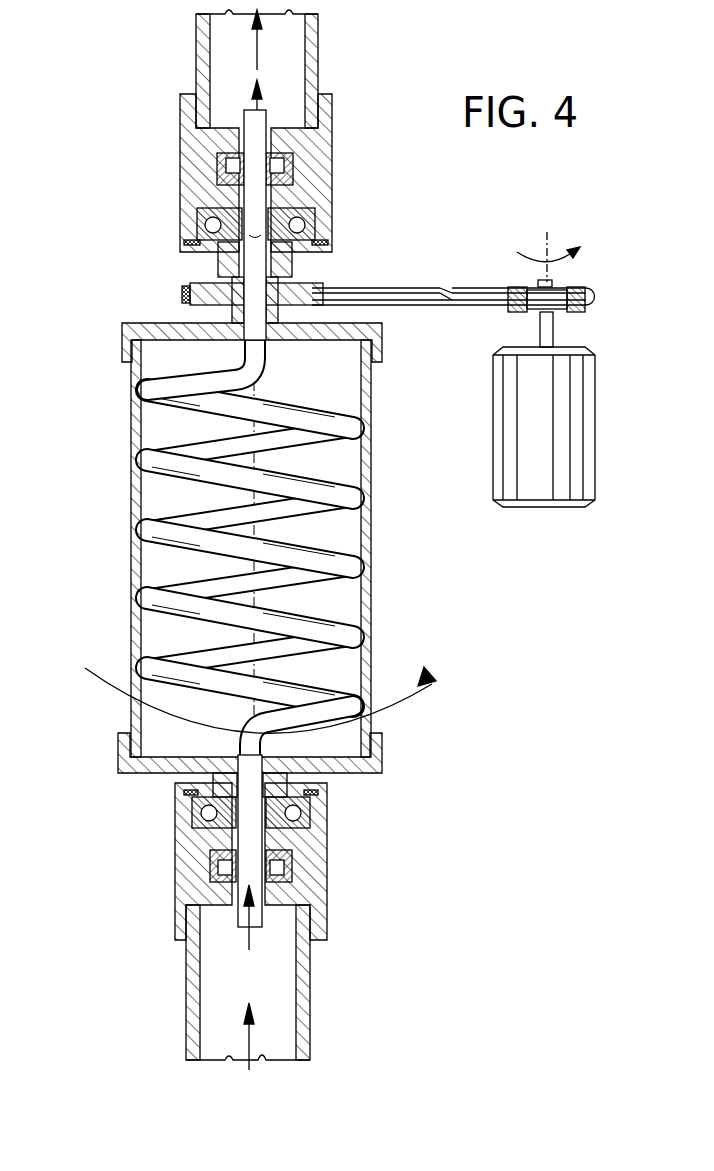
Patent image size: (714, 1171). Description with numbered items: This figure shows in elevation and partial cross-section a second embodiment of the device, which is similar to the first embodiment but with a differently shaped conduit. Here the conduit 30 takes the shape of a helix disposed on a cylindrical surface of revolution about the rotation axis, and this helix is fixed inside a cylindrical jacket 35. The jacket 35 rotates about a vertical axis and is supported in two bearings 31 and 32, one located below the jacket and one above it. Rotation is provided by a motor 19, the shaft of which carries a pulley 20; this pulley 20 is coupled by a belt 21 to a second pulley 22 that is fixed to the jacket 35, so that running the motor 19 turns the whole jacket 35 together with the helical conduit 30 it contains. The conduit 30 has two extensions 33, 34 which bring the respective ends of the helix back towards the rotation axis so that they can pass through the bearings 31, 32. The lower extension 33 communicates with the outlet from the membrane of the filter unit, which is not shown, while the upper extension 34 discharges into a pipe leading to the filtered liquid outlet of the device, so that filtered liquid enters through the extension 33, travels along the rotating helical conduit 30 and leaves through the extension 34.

The motor 19 is at (577, 437).
The pulley 20 is at (573, 283).
The belt 21 is at (448, 290).
The pulley 22 is at (302, 284).
The conduit 30 is at (277, 553).
The bearing 31 is at (310, 860).
The bearing 32 is at (313, 156).
The extension 33 is at (300, 717).
The extension 34 is at (207, 375).
The cylindrical jacket 35 is at (137, 495).